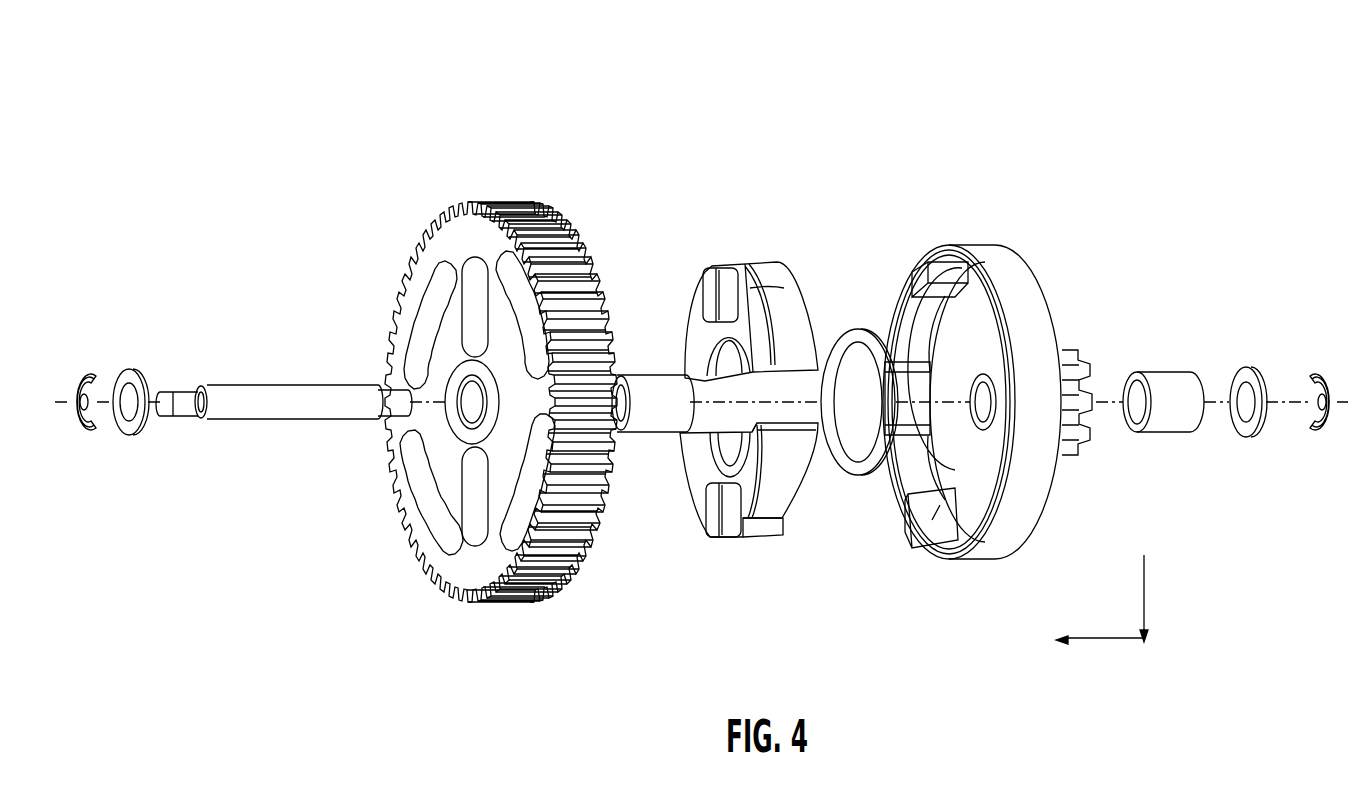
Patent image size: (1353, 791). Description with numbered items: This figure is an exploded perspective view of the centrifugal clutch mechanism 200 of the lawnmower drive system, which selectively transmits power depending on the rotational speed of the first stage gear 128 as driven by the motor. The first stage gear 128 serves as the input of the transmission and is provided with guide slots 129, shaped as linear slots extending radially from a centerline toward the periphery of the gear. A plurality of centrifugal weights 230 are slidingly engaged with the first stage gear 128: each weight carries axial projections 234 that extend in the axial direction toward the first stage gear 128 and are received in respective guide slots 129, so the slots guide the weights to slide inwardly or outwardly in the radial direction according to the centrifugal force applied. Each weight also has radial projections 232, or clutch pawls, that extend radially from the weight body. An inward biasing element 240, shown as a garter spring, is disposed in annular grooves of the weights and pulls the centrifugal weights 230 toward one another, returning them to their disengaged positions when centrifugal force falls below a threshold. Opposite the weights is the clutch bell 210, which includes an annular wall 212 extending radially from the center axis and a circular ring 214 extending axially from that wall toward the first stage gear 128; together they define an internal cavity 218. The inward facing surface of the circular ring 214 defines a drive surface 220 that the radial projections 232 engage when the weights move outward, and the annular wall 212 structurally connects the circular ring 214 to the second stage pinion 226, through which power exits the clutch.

The centrifugal clutch mechanism 200 is at (646, 93).
The first stage gear 128 is at (565, 545).
The guide slots 129 is at (472, 283).
The clutch bell 210 is at (989, 241).
The annular wall 212 is at (1005, 318).
The circular ring 214 is at (975, 246).
The internal cavity 218 is at (940, 319).
The drive surface 220 is at (935, 515).
The second stage pinion 226 is at (1070, 455).
The centrifugal weights 230 is at (797, 489).
The radial projections 232 is at (758, 272).
The axial projections 234 is at (706, 282).
The inward biasing element 240 is at (836, 340).